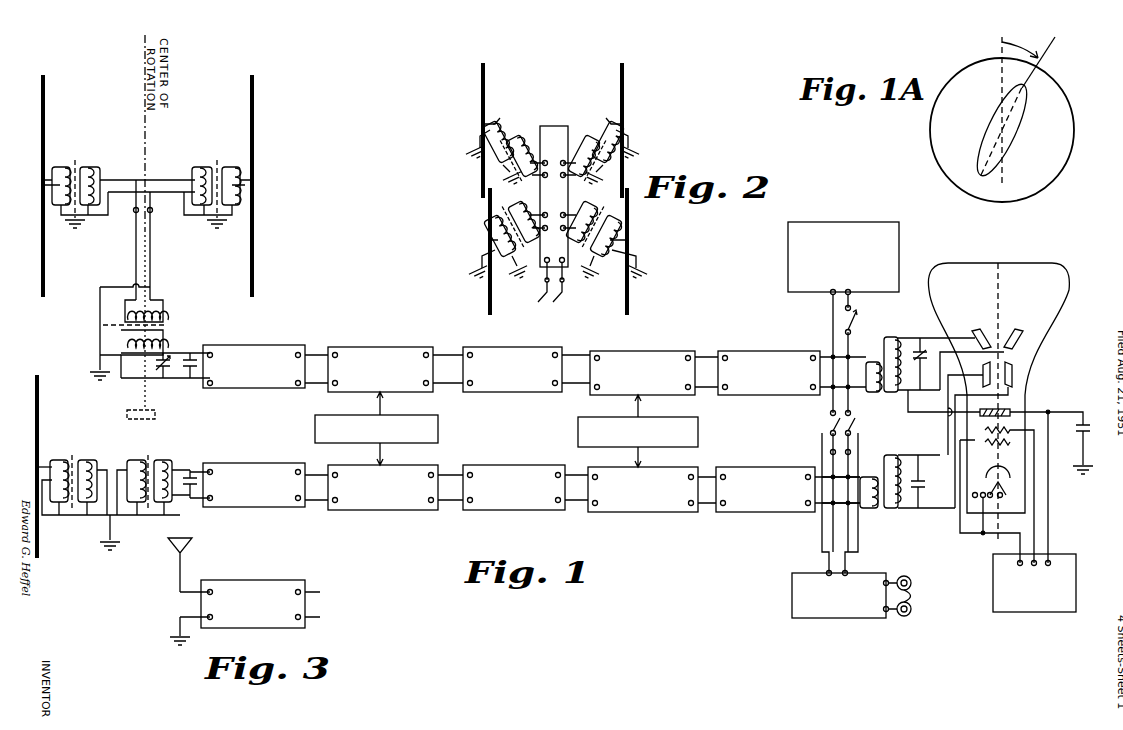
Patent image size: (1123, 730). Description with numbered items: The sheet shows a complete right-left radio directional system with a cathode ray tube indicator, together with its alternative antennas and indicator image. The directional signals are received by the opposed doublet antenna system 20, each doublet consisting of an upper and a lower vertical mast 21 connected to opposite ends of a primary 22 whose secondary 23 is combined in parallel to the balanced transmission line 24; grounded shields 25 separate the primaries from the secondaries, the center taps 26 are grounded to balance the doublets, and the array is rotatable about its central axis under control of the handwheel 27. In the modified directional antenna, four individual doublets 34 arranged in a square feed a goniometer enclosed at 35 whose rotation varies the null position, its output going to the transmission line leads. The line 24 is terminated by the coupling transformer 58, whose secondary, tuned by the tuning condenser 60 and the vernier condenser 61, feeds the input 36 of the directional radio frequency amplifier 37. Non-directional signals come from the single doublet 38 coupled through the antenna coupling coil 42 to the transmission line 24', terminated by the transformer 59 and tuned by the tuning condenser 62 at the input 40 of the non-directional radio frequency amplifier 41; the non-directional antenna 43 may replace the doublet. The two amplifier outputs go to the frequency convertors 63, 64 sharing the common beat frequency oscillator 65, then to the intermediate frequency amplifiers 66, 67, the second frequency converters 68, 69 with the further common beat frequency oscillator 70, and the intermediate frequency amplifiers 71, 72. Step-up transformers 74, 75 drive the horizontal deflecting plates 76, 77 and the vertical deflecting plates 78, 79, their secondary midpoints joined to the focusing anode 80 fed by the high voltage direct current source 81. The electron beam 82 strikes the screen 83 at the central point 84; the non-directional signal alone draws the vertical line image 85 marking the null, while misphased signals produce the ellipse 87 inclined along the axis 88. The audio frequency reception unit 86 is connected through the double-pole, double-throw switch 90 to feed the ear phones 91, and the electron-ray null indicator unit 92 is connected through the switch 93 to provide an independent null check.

In FIG. 1, the opposed doublet antenna system 20 is at (170, 168).
In FIG. 1, the vertical mast 21 is at (45, 124).
In FIG. 1, the primary of radio frequency coupling coil 22 is at (63, 167).
In FIG. 1, the secondary of coupling coil 23 is at (92, 167).
In FIG. 1, the balanced transmission line 24 is at (157, 240).
In FIG. 1, the transmission line 24' is at (119, 451).
In FIG. 2, the transmission line 24' is at (543, 288).
In FIG. 1, the grounded shield 25 is at (76, 162).
In FIG. 1, the center tap 26 is at (45, 186).
In FIG. 1, the handwheel 27 is at (155, 416).
In FIG. 2, the individual doublet 34 is at (475, 116).
In FIG. 2, the goniometer enclosure 35 is at (555, 126).
In FIG. 1, the input of directional radio frequency amplifier 36 is at (214, 382).
In FIG. 1, the directional antenna radio frequency amplifier 37 is at (280, 345).
In FIG. 1, the single doublet 38 is at (30, 470).
In FIG. 1, the input of non-directional radio frequency amplifier 40 is at (214, 497).
In FIG. 3, the input of non-directional radio frequency amplifier 40 is at (208, 615).
In FIG. 1, the non-directional radio frequency amplifier 41 is at (280, 463).
In FIG. 3, the non-directional radio frequency amplifier 41 is at (280, 584).
In FIG. 1, the antenna coupling coil 42 is at (73, 460).
In FIG. 3, the non-directional antenna 43 is at (192, 542).
In FIG. 1, the coupling transformer 58 is at (165, 325).
In FIG. 1, the transformer 59 is at (160, 460).
In FIG. 1, the tuning condenser 60 is at (163, 372).
In FIG. 1, the vernier condenser 61 is at (192, 372).
In FIG. 1, the tuning condenser 62 is at (192, 472).
In FIG. 1, the frequency convertor 63 is at (425, 340).
In FIG. 1, the frequency convertor 64 is at (388, 510).
In FIG. 1, the common beat frequency oscillator 65 is at (438, 422).
In FIG. 1, the intermediate frequency amplifier 66 is at (556, 340).
In FIG. 1, the intermediate frequency amplifier 67 is at (537, 510).
In FIG. 1, the second frequency converter 68 is at (683, 345).
In FIG. 1, the second frequency converter 69 is at (650, 512).
In FIG. 1, the common beat frequency oscillator 70 is at (698, 424).
In FIG. 1, the intermediate frequency amplifier 71 is at (790, 351).
In FIG. 1, the intermediate frequency amplifier 72 is at (750, 512).
In FIG. 1, the step-up transformer 74 is at (882, 360).
In FIG. 1, the step-up transformer 75 is at (878, 505).
In FIG. 1, the horizontal deflecting plate 76 is at (980, 331).
In FIG. 1, the horizontal deflecting plate 77 is at (1016, 329).
In FIG. 1, the vertical deflecting plate 78 is at (983, 373).
In FIG. 1, the vertical deflecting plate 79 is at (1012, 374).
In FIG. 1, the focusing anode 80 is at (1010, 413).
In FIG. 1, the high voltage direct current source 81 is at (1050, 612).
In FIG. 1, the electron beam 82 is at (1000, 292).
In FIG. 1, the screen 83 is at (965, 266).
In FIG. 1A, the screen 83 is at (1052, 94).
In FIG. 1, the central point 84 is at (1000, 263).
In FIG. 1A, the vertical line image 85 is at (1000, 80).
In FIG. 1, the audio frequency reception unit 86 is at (858, 618).
In FIG. 1A, the resultant fluorescent image 87 is at (975, 146).
In FIG. 1A, the axis of ellipse 88 is at (1014, 114).
In FIG. 1, the double-pole, double-throw switch 90 is at (852, 426).
In FIG. 1, the ear phones 91 is at (912, 596).
In FIG. 1, the electron-ray null indicator unit 92 is at (845, 222).
In FIG. 1, the switch 93 is at (860, 326).